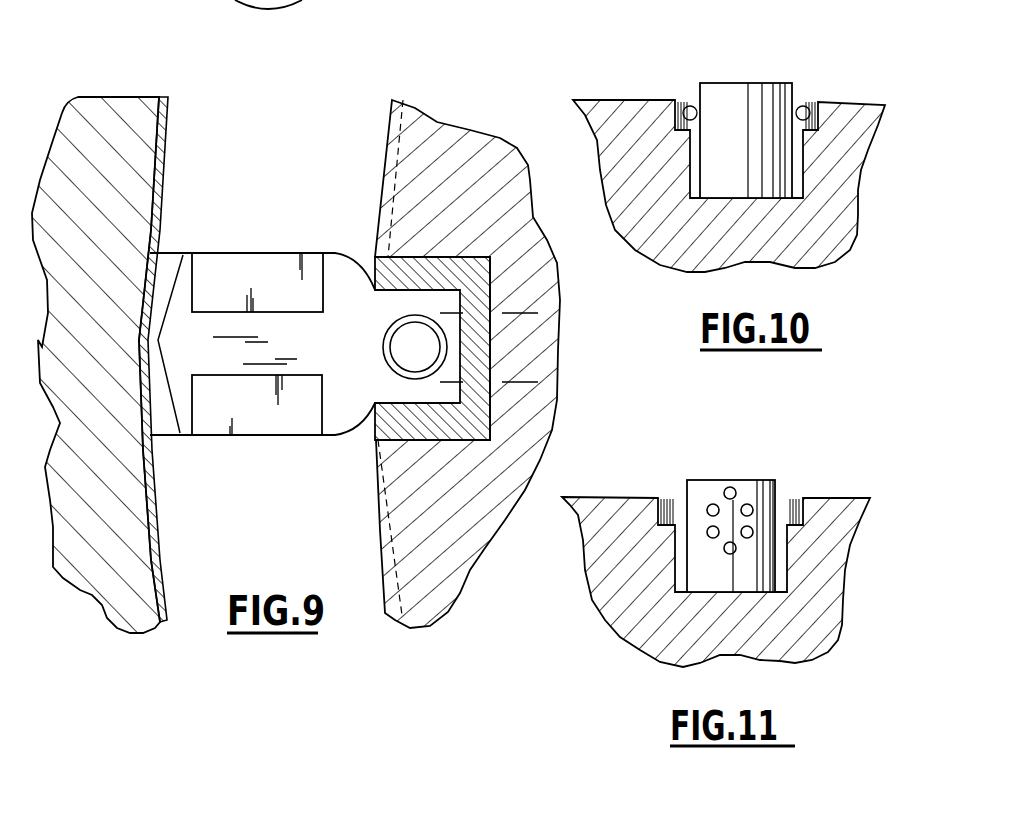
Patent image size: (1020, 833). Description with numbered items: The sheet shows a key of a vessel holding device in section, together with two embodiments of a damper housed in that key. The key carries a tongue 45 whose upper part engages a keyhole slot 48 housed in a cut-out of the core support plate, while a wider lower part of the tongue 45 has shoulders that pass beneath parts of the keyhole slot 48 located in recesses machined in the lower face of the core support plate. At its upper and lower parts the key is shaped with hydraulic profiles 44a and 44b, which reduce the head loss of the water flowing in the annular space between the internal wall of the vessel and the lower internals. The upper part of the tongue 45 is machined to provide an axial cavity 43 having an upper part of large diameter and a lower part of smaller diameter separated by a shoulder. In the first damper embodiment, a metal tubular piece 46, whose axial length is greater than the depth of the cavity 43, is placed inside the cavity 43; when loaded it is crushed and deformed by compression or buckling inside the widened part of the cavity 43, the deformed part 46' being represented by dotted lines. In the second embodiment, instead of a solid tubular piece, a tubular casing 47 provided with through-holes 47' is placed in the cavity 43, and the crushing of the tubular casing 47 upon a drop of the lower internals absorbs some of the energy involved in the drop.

In FIG. 10, the axial cavity 43 is at (795, 155).
In FIG. 11, the axial cavity 43 is at (780, 572).
In FIG. 9, the hydraulic profile 44a is at (223, 265).
In FIG. 9, the hydraulic profile 44b is at (245, 427).
In FIG. 9, the tongue 45 is at (372, 385).
In FIG. 10, the metal tubular piece 46 is at (746, 109).
In FIG. 10, the deformed part 46' is at (770, 90).
In FIG. 11, the tubular casing 47 is at (700, 522).
In FIG. 11, the through-holes 47' is at (752, 486).
In FIG. 9, the keyhole slot 48 is at (477, 352).